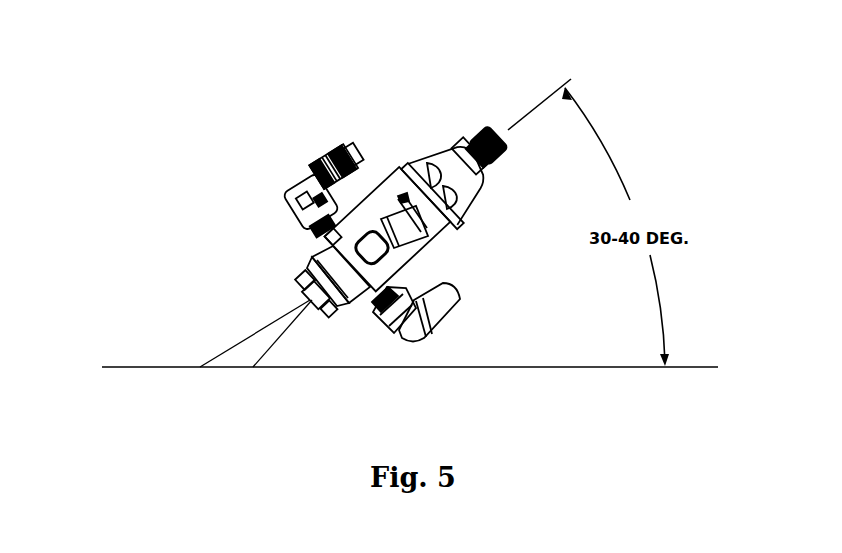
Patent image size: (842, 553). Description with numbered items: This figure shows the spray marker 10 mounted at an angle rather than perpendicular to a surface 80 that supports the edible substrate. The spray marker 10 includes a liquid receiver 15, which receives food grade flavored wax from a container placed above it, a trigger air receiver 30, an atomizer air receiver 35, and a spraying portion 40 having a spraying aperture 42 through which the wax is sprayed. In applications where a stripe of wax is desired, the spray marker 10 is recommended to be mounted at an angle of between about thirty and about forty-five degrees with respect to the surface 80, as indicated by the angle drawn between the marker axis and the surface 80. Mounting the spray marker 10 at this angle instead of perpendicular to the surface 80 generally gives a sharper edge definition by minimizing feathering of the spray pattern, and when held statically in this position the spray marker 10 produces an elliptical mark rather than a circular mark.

The spray marker 10 is at (395, 104).
The liquid receiver 15 is at (303, 172).
The trigger air receiver 30 is at (420, 258).
The atomizer air receiver 35 is at (458, 320).
The spraying portion 40 is at (311, 277).
The spraying aperture 42 is at (309, 305).
The surface 80 is at (122, 367).